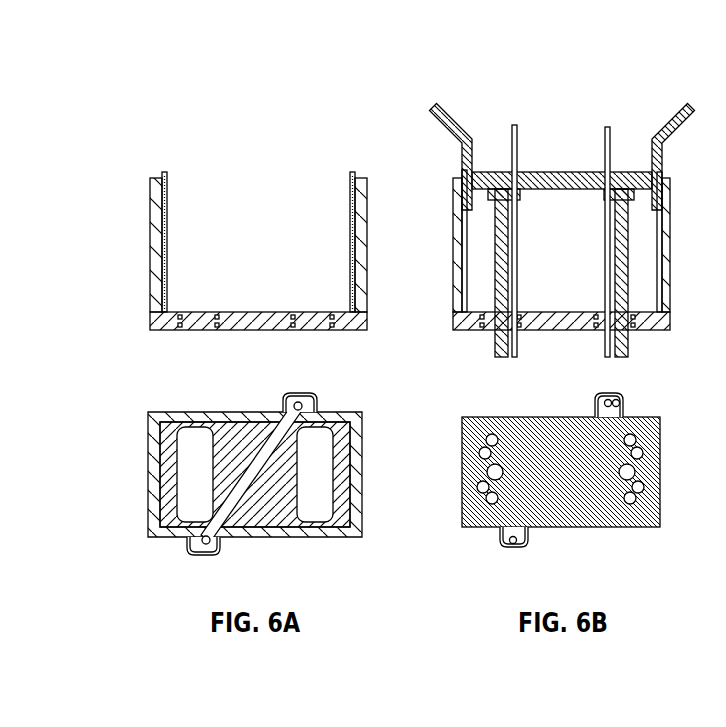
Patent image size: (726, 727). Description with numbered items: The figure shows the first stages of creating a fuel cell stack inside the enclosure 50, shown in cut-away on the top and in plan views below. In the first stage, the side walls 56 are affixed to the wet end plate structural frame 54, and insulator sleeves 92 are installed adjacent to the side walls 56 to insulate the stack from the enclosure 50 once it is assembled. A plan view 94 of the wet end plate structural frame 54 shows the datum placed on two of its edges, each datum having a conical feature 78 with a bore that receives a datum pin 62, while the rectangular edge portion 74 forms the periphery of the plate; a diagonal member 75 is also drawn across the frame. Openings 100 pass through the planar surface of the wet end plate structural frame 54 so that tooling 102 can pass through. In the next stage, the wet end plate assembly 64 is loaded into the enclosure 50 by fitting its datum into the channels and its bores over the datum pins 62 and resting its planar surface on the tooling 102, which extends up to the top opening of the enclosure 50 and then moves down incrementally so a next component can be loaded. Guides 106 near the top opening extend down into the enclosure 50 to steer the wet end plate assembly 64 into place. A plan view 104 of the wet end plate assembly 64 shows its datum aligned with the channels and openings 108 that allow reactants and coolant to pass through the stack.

In FIG. 6A, the enclosure 50 is at (256, 371).
In FIG. 6A, the wet end plate structural frame 54 is at (313, 330).
In FIG. 6A, the side walls 56 is at (150, 250).
In FIG. 6B, the datum pin 62 is at (604, 348).
In FIG. 6B, the wet end plate assembly 64 is at (545, 170).
In FIG. 6A, the edge portion 74 is at (313, 410).
In FIG. 6B, the edge portion 74 is at (622, 405).
In FIG. 6A, the diagonal brace 75 is at (218, 545).
In FIG. 6A, the conical feature 78 is at (293, 405).
In FIG. 6A, the insulator sleeves 92 is at (166, 195).
In FIG. 6A, the plan view 94 is at (259, 374).
In FIG. 6A, the openings 100 is at (187, 460).
In FIG. 6B, the tooling 102 is at (495, 345).
In FIG. 6B, the plan view 104 is at (567, 480).
In FIG. 6B, the guides 106 is at (440, 111).
In FIG. 6B, the openings 108 is at (485, 453).